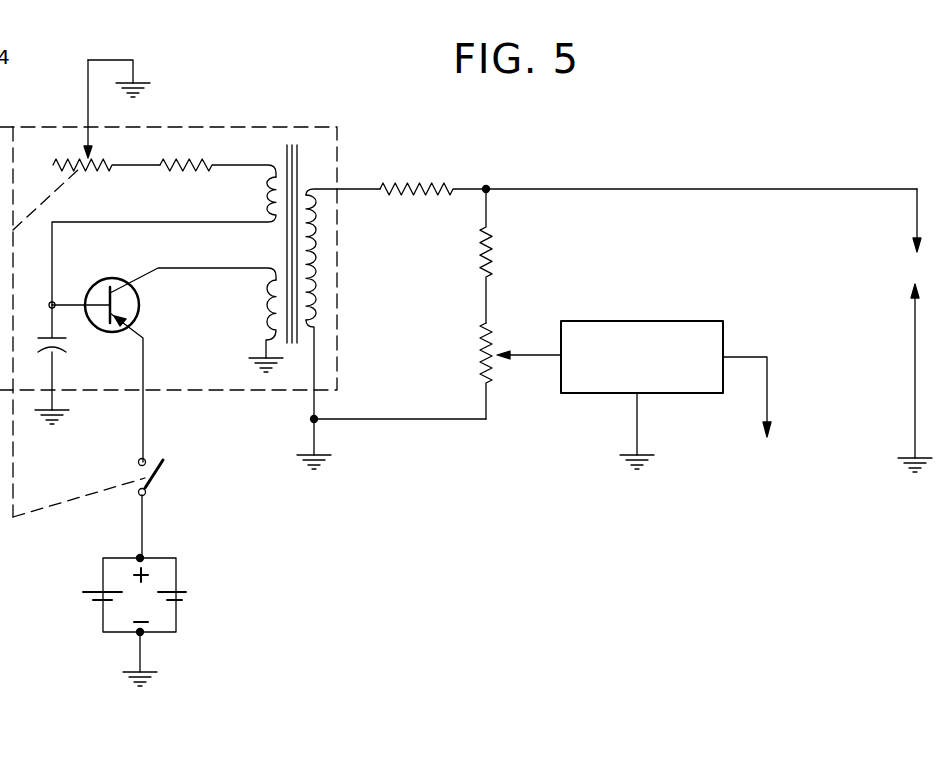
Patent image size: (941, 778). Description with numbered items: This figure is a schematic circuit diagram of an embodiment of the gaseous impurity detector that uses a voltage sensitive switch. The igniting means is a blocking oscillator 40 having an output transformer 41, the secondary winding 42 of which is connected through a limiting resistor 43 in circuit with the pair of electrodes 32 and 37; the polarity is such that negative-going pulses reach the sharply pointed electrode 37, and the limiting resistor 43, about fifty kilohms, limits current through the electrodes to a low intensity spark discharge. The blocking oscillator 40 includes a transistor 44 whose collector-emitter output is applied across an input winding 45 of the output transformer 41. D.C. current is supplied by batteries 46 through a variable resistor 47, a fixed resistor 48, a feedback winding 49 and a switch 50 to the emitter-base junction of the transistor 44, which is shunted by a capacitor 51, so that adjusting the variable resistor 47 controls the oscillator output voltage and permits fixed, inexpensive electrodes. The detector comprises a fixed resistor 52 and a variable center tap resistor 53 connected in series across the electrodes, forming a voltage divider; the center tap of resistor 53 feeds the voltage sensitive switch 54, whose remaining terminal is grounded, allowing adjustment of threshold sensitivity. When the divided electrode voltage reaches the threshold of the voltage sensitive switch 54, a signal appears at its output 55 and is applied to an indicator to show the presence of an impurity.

The blocking oscillator 40 is at (262, 127).
The output transformer 41 is at (306, 176).
The secondary winding 42 is at (325, 258).
The limiting resistor 43 is at (420, 183).
The transistor 44 is at (110, 282).
The input winding 45 is at (256, 310).
The batteries 46 is at (82, 592).
The variable resistor 47 is at (103, 158).
The fixed resistor 48 is at (203, 158).
The feedback winding 49 is at (257, 197).
The switch 50 is at (163, 470).
The capacitor 51 is at (68, 350).
The fixed resistor 52 is at (495, 258).
The variable center tap resistor 53 is at (478, 356).
The voltage sensitive switch 54 is at (685, 323).
The output 55 is at (770, 400).
The electrode 32 is at (915, 246).
The sharply pointed electrode 37 is at (913, 298).